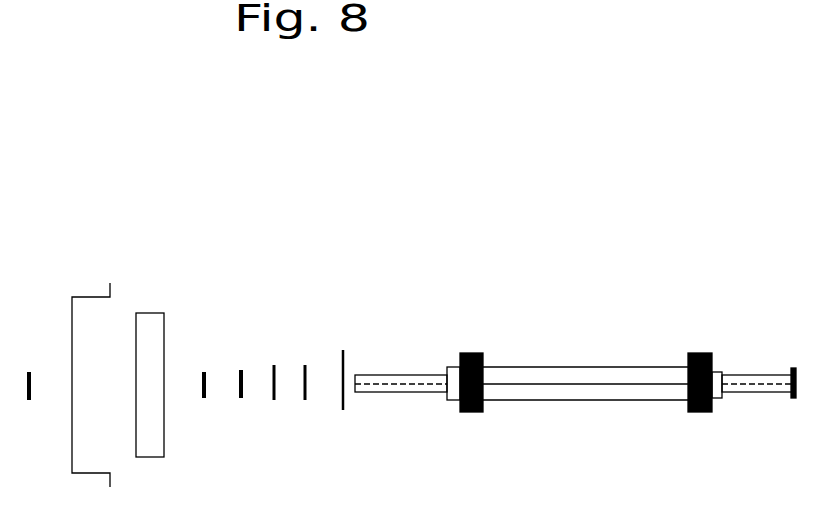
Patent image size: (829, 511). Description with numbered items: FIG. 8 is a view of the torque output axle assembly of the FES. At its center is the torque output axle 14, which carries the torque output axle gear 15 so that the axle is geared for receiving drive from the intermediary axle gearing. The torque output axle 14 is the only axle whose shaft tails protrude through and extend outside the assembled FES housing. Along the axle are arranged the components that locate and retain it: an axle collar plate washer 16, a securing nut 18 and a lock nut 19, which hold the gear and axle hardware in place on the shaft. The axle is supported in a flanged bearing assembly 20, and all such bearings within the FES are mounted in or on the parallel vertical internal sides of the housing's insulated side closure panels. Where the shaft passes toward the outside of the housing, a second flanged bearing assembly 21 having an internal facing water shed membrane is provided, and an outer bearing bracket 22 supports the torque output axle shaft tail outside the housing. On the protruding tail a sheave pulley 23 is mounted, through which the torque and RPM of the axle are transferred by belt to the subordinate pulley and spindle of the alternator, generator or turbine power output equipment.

The torque output axle 14 is at (585, 367).
The torque output axle gear 15 is at (471, 355).
The axle collar plate washer 16 is at (343, 350).
The securing nut 18 is at (305, 365).
The lock nut 19 is at (274, 365).
The flanged bearing assembly 20 is at (29, 372).
The flanged bearing assembly having internal facing water shed membrane 21 is at (204, 372).
The outer bearing bracket 22 is at (91, 297).
The sheave pulley 23 is at (150, 313).